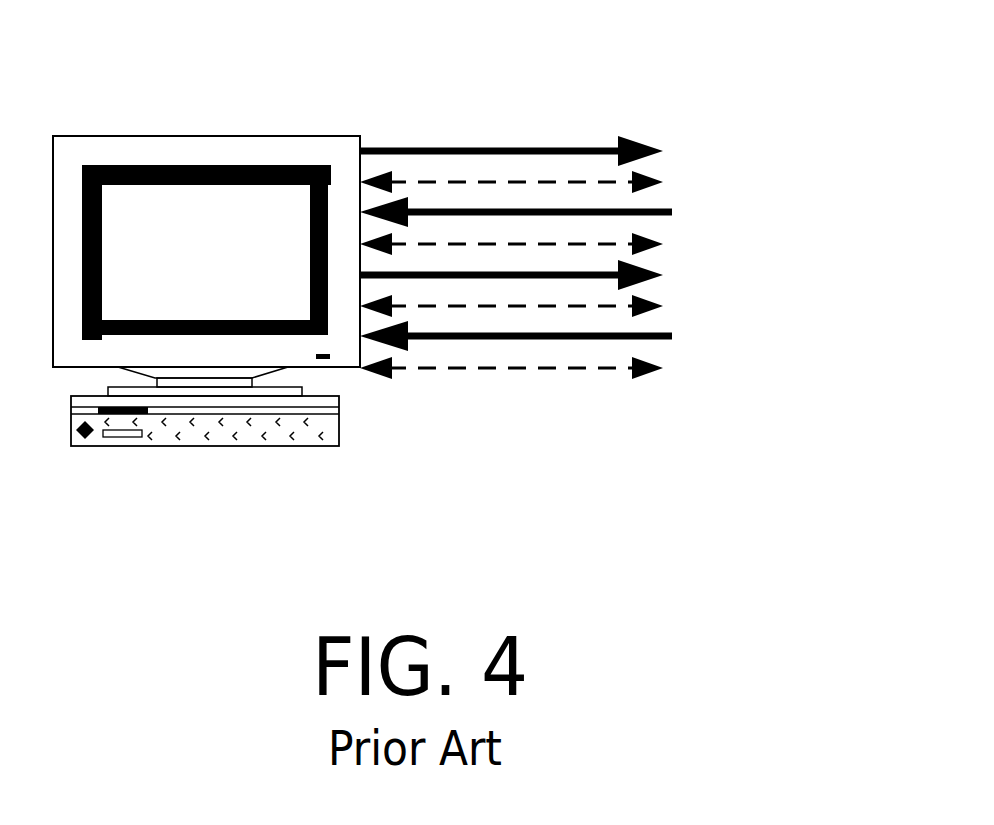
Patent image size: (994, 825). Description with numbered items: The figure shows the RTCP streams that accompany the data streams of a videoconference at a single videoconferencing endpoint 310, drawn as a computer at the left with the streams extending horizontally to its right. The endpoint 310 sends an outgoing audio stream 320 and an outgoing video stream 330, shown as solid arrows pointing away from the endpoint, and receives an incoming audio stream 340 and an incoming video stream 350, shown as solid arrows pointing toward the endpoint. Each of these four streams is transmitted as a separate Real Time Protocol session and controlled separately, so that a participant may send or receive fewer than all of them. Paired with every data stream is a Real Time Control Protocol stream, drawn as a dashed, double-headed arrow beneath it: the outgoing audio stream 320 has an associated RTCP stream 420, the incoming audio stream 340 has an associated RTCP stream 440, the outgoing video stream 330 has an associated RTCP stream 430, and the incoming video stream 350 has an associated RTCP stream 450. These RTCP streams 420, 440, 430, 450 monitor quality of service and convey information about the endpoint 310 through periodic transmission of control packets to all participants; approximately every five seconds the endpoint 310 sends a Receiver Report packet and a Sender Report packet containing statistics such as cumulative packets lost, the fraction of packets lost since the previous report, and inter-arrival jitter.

The endpoint 310 is at (205, 136).
The outgoing audio stream 320 is at (452, 148).
The RTCP stream 420 is at (663, 182).
The incoming audio stream 340 is at (672, 212).
The RTCP stream 440 is at (663, 244).
The outgoing video stream 330 is at (663, 275).
The RTCP stream 430 is at (663, 306).
The incoming video stream 350 is at (663, 336).
The RTCP stream 450 is at (522, 368).